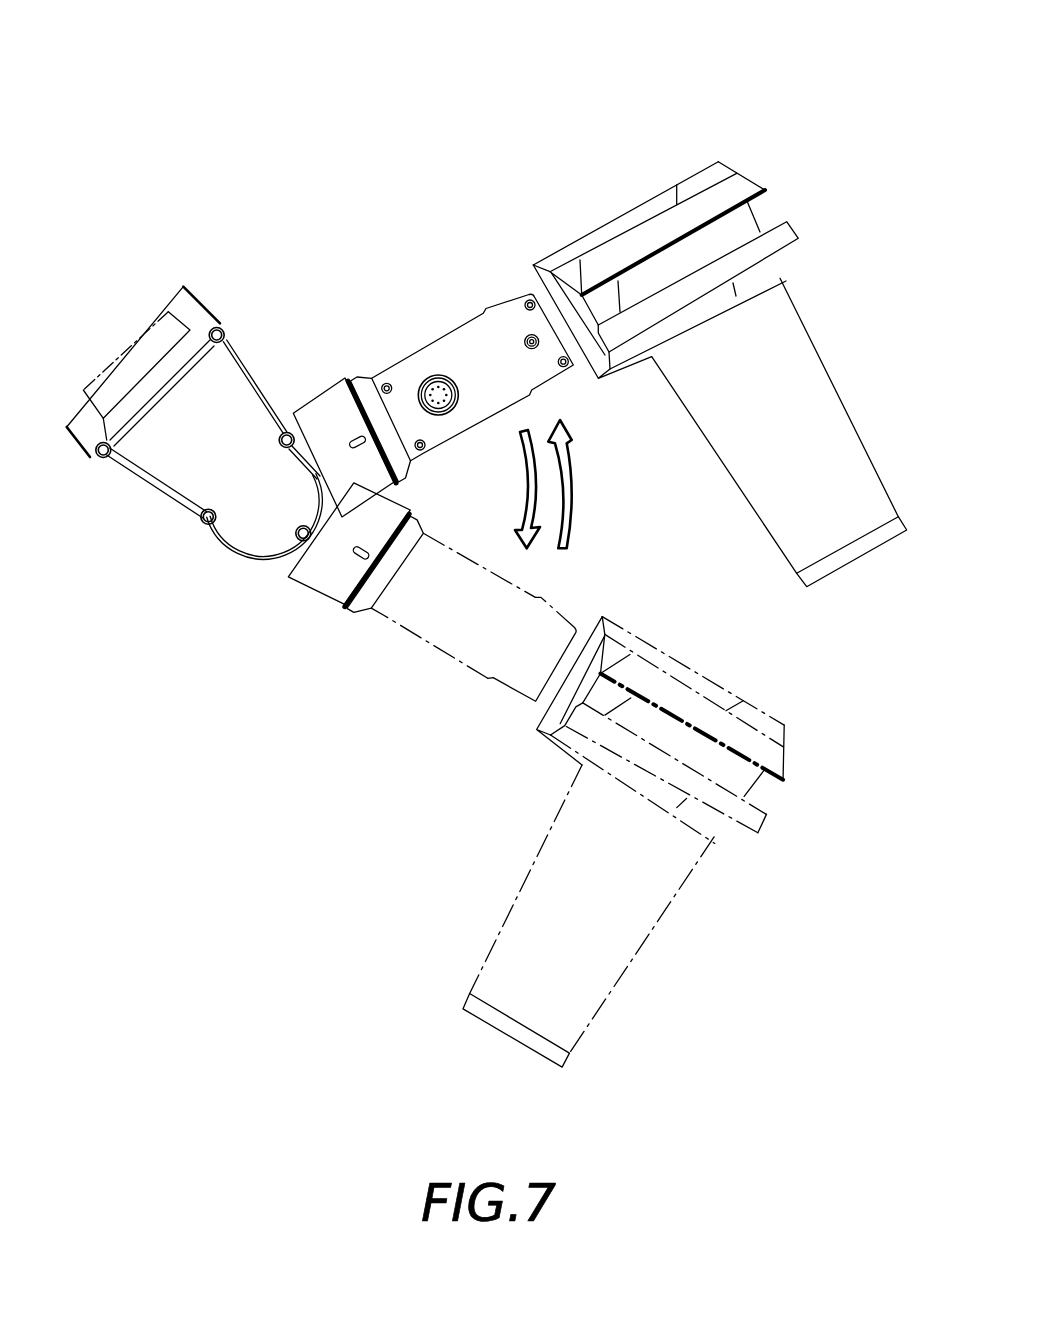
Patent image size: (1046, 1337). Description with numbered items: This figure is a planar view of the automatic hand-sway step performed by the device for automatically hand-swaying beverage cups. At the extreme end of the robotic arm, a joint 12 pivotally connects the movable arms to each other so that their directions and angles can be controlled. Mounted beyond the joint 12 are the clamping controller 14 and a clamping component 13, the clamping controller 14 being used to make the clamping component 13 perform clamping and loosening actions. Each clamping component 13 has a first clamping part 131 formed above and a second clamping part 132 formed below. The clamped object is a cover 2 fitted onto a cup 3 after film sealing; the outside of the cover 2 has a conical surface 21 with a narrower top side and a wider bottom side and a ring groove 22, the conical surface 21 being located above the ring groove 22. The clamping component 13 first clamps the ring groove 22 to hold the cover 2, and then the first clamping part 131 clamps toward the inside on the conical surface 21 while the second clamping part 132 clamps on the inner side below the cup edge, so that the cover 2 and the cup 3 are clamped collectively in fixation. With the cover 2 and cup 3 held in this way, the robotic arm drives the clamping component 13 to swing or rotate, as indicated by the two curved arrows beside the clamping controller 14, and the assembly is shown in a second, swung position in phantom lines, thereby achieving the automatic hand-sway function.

The cover 2 is at (741, 191).
The cup 3 is at (822, 355).
The joint 12 is at (323, 407).
The clamping component 13 is at (635, 195).
The first clamping part 131 is at (708, 175).
The second clamping part 132 is at (647, 297).
The clamping controller 14 is at (450, 330).
The conical surface 21 is at (742, 173).
The ring groove 22 is at (757, 217).